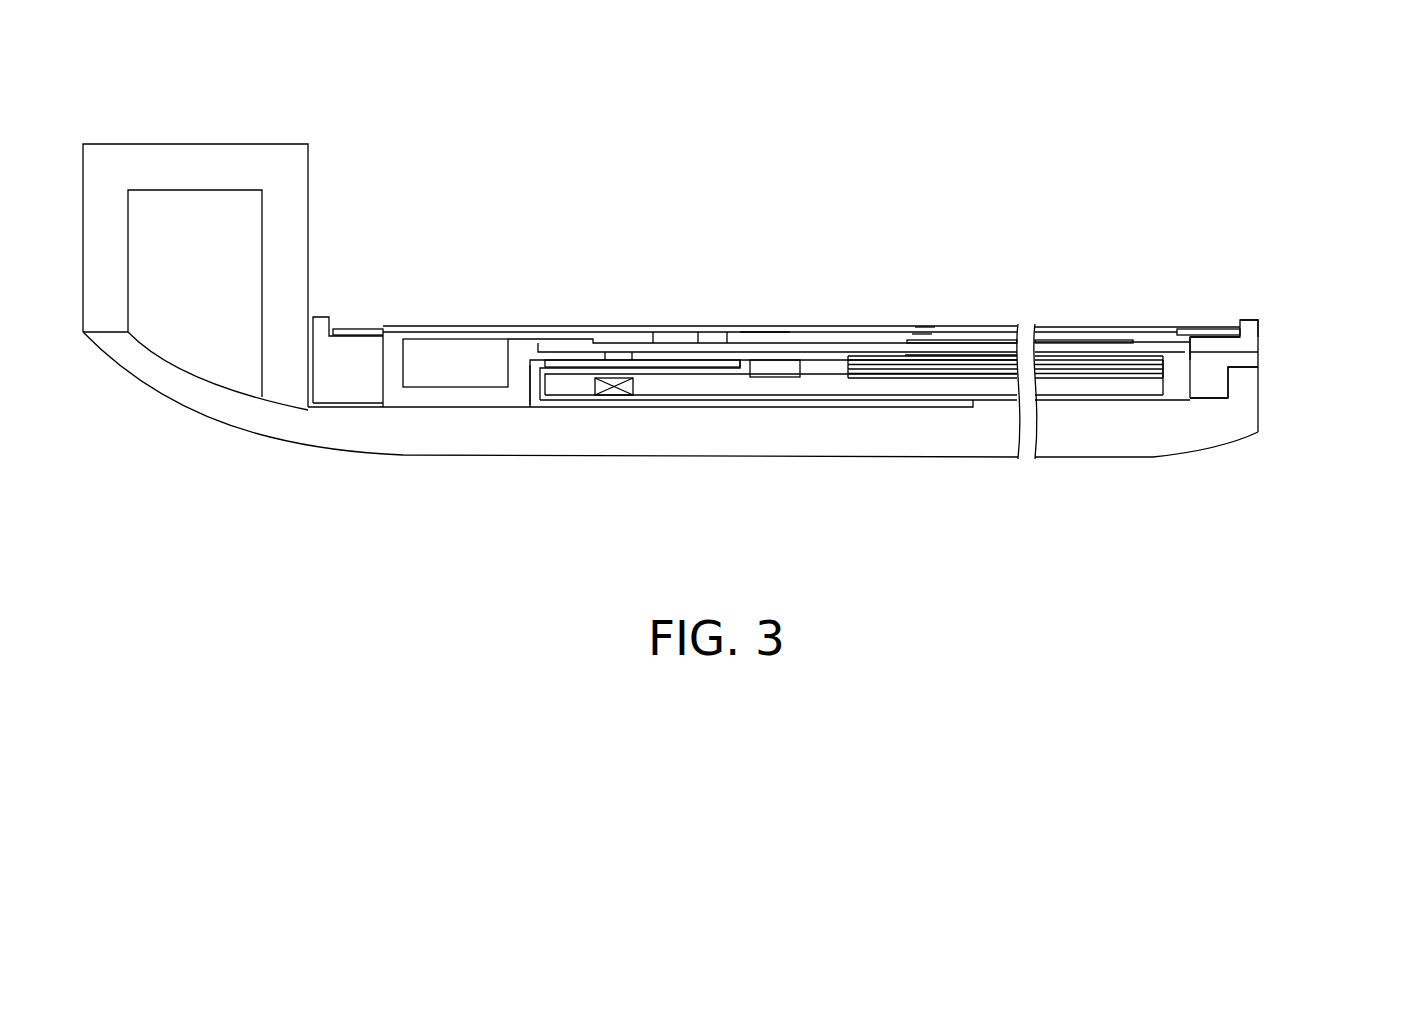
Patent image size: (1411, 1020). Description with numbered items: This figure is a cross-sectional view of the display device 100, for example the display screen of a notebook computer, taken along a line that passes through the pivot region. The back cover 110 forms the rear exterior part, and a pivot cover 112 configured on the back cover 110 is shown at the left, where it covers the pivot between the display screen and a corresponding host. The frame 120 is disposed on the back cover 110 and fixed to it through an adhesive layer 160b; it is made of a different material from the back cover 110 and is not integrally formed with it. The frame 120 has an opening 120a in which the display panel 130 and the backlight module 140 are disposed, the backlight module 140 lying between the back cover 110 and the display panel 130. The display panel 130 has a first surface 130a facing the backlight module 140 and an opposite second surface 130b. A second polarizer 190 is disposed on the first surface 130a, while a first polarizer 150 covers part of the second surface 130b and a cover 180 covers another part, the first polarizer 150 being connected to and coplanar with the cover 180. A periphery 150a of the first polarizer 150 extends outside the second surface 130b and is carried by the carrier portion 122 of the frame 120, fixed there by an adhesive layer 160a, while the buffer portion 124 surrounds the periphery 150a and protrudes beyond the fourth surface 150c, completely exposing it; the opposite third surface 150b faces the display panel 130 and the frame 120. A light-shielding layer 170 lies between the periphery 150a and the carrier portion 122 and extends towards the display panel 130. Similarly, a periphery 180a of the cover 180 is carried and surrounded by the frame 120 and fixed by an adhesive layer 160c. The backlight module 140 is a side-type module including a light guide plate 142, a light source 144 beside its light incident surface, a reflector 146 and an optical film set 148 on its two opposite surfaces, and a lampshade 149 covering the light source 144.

The display device 100 is at (1372, 571).
The back cover 110 is at (985, 437).
The pivot cover 112 is at (205, 165).
The frame 120 is at (1330, 312).
The opening 120a is at (1150, 333).
The carrier portion 122 is at (1236, 353).
The buffer portion 124 is at (1253, 330).
The display panel 130 is at (1070, 332).
The first surface 130a is at (944, 364).
The second surface 130b is at (758, 320).
The backlight module 140 is at (1184, 387).
The light guide plate 142 is at (713, 387).
The light source 144 is at (613, 396).
The reflector 146 is at (768, 397).
The optical film set 148 is at (1163, 367).
The lampshade 149 is at (528, 390).
The first polarizer 150 is at (905, 340).
The periphery 150a is at (1237, 325).
The third surface 150b is at (921, 344).
The fourth surface 150c is at (923, 318).
The adhesive layer 160a is at (1182, 349).
The adhesive layer 160b is at (1212, 400).
The adhesive layer 160c is at (385, 331).
The light-shielding layer 170 is at (1247, 322).
The cover 180 is at (608, 330).
The periphery 180a is at (383, 325).
The second polarizer 190 is at (992, 357).